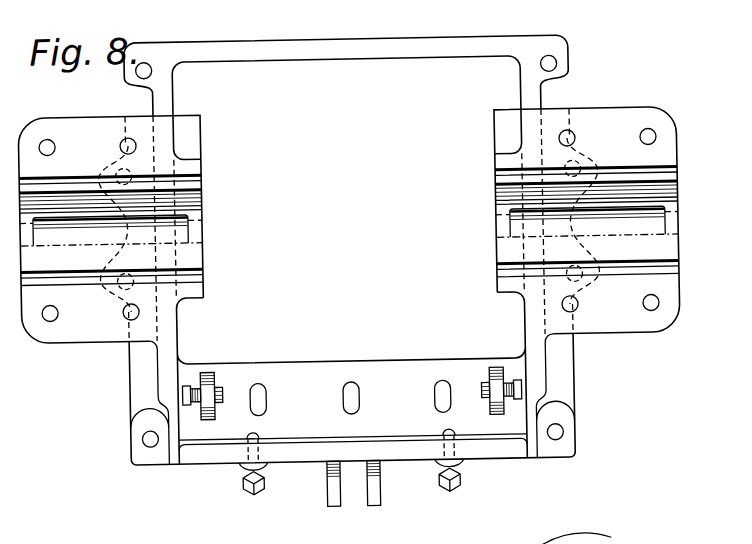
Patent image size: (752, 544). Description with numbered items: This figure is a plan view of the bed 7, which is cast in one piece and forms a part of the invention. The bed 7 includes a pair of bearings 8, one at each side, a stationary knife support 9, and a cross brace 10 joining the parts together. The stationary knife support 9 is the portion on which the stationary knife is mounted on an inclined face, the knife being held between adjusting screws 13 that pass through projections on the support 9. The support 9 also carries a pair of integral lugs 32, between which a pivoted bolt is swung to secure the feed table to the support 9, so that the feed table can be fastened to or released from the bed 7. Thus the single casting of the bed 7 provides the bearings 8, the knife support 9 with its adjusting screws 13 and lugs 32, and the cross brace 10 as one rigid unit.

The bed 7 is at (138, 366).
The bearings 8 is at (69, 329).
The stationary knife support 9 is at (393, 378).
The cross brace 10 is at (328, 50).
The adjusting screws 13 is at (220, 392).
The lugs 32 is at (328, 503).